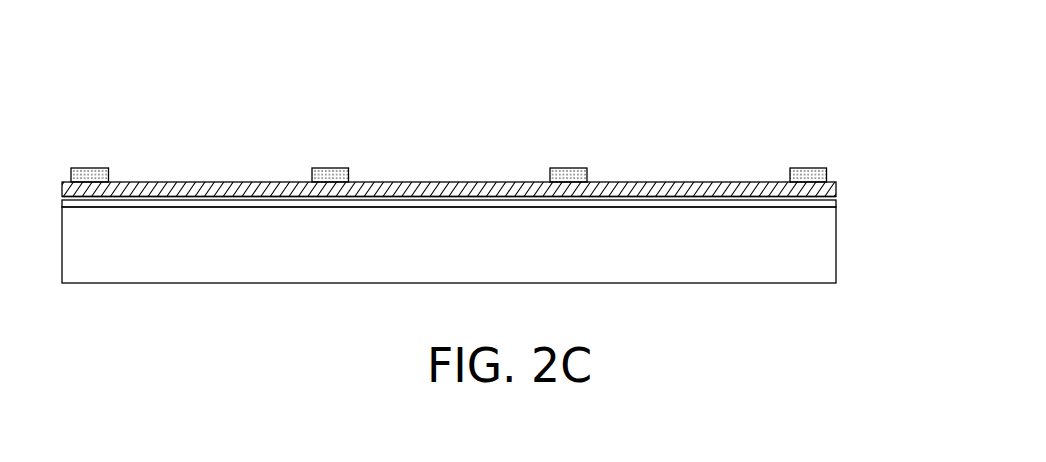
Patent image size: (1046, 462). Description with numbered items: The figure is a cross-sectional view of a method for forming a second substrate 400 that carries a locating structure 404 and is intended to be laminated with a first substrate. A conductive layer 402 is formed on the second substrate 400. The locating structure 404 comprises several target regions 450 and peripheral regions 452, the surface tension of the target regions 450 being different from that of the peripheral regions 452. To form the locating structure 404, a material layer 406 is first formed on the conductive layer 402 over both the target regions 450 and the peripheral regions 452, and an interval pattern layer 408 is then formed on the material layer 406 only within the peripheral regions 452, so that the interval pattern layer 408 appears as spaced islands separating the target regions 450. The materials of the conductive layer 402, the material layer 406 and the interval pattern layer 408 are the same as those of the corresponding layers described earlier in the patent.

The second substrate 400 is at (827, 264).
The conductive layer 402 is at (833, 203).
The locating structure 404 is at (504, 159).
The material layer 406 is at (830, 192).
The interval pattern layer 408 is at (817, 168).
The target regions 450 is at (312, 217).
The peripheral regions 452 is at (108, 217).